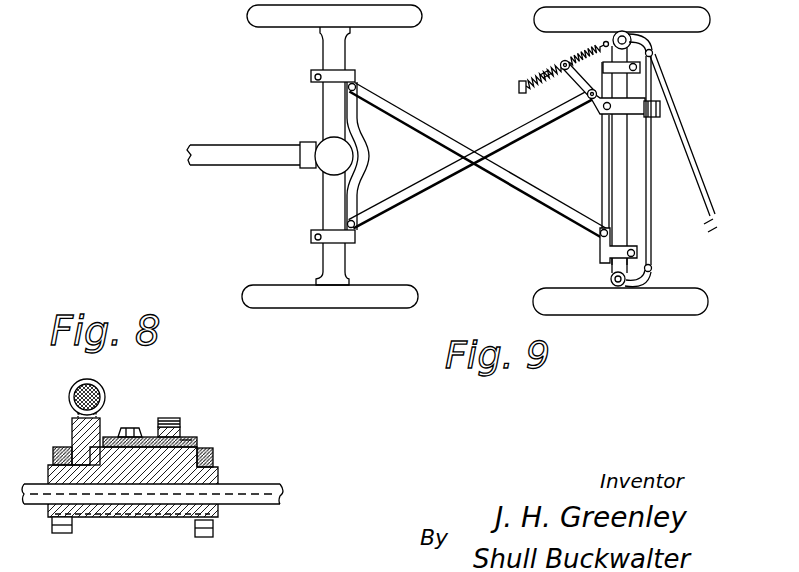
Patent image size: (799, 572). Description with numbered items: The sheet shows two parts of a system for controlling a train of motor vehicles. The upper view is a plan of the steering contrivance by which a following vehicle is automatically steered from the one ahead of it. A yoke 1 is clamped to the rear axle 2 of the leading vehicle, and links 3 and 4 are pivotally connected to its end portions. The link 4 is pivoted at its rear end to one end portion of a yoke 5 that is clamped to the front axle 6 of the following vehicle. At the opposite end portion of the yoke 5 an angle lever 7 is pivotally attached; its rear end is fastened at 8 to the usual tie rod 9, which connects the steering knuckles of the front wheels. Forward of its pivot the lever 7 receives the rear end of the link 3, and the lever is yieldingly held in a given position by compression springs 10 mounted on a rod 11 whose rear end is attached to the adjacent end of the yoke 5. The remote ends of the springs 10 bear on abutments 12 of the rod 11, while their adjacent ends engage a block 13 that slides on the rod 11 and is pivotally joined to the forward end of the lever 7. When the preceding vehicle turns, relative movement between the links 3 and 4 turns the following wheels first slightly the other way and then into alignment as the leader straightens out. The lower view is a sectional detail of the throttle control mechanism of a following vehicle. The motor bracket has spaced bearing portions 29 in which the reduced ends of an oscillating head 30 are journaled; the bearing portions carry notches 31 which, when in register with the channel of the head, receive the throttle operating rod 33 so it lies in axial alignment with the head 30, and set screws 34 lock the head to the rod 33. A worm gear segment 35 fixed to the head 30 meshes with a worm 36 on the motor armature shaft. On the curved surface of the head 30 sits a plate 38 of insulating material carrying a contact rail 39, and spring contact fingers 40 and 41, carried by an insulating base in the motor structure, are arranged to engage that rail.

In FIG. 9, the yoke 1 is at (355, 113).
In FIG. 9, the rear axle 2 is at (325, 198).
In FIG. 9, the link 3 is at (415, 196).
In FIG. 9, the link 4 is at (423, 125).
In FIG. 9, the yoke 5 is at (602, 163).
In FIG. 9, the front axle 6 is at (622, 207).
In FIG. 9, the angle lever 7 is at (640, 102).
In FIG. 9, the attachment 8 is at (661, 112).
In FIG. 9, the tie rod 9 is at (652, 172).
In FIG. 9, the compression springs 10 is at (540, 75).
In FIG. 9, the rod 11 is at (543, 78).
In FIG. 9, the abutments 12 is at (522, 83).
In FIG. 9, the block 13 is at (570, 75).
In FIG. 8, the bearing portions 29 is at (53, 453).
In FIG. 8, the oscillating head 30 is at (158, 520).
In FIG. 8, the notches 31 is at (62, 533).
In FIG. 8, the throttle operating rod 33 is at (265, 493).
In FIG. 8, the set screws 34 is at (132, 428).
In FIG. 8, the worm gear segment 35 is at (72, 425).
In FIG. 8, the worm 36 is at (101, 395).
In FIG. 8, the plate 38 is at (200, 442).
In FIG. 8, the contact rail 39 is at (188, 438).
In FIG. 8, the spring contact finger 40 is at (180, 433).
In FIG. 8, the spring contact finger 41 is at (170, 417).